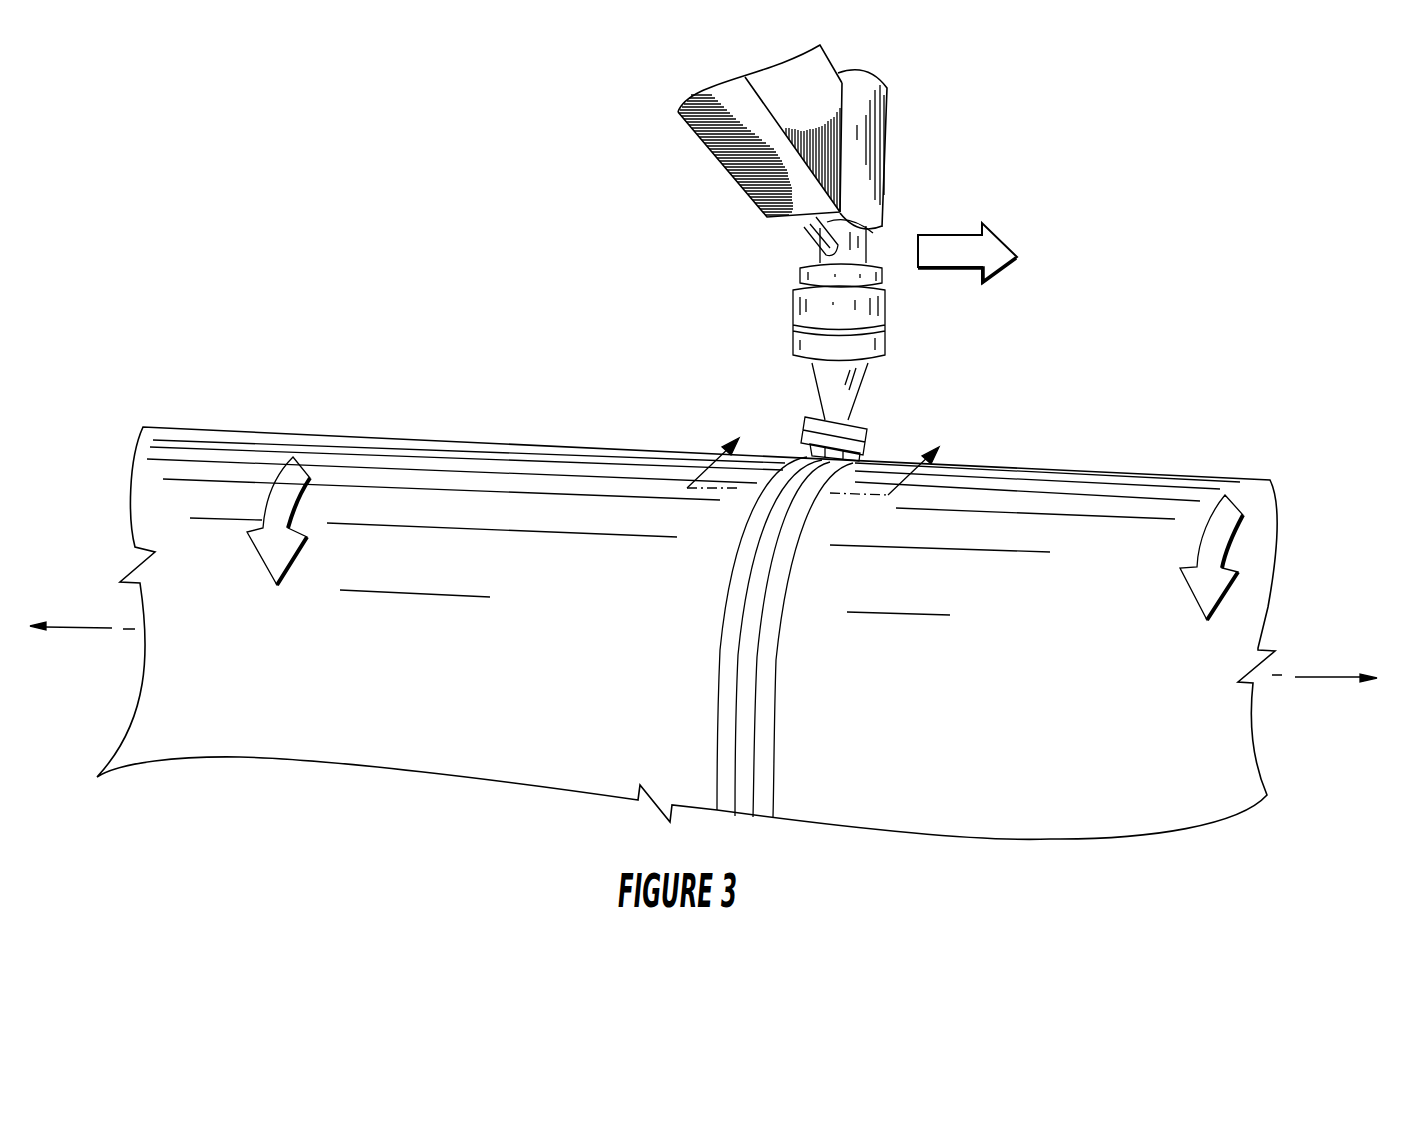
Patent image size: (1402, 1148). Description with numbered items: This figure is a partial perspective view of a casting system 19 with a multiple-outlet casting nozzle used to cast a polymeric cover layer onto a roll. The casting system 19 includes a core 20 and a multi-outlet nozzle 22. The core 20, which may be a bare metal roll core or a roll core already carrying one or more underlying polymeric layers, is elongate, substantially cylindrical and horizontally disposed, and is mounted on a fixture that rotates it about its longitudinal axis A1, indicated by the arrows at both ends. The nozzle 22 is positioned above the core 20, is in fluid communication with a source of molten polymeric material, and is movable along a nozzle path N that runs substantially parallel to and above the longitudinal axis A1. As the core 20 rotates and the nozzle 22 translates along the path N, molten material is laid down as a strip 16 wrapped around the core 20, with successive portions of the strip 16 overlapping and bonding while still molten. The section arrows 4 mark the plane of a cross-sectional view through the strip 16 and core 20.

The section line 4- 4 is at (804, 486).
The strip 16 is at (800, 472).
The casting system 19 is at (926, 198).
The core 20 is at (1138, 505).
The multi-outlet nozzle 22 is at (835, 395).
The nozzle path N is at (992, 262).
The longitudinal axis A1 is at (1335, 678).